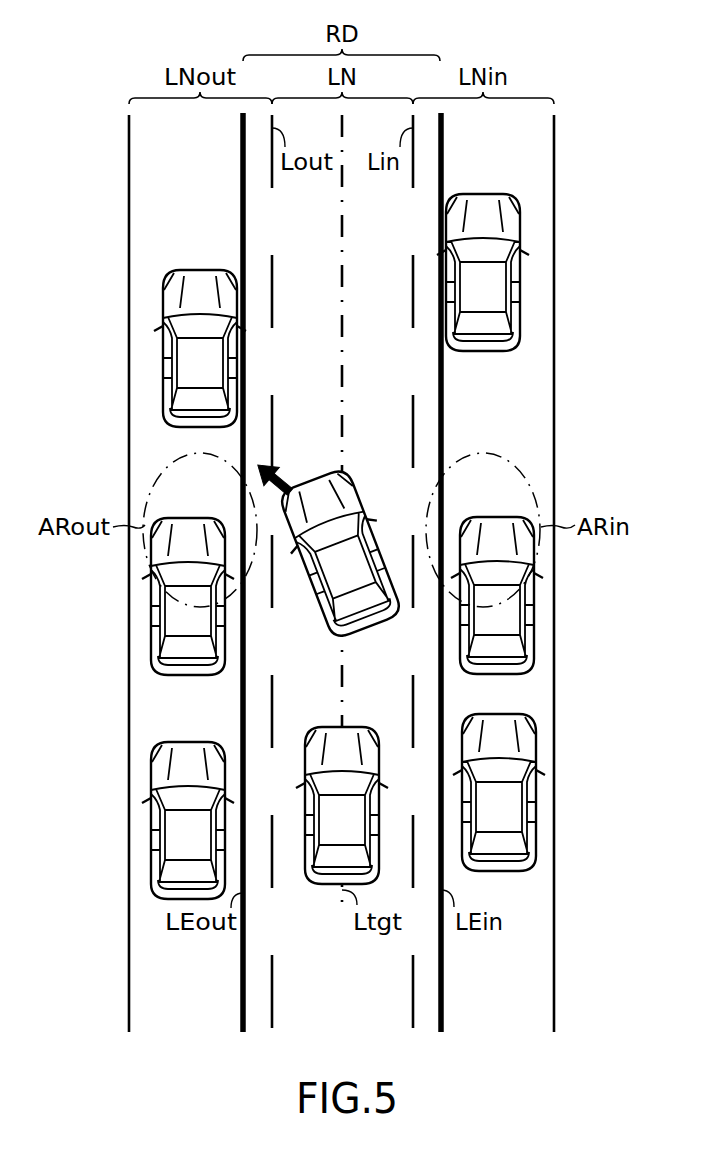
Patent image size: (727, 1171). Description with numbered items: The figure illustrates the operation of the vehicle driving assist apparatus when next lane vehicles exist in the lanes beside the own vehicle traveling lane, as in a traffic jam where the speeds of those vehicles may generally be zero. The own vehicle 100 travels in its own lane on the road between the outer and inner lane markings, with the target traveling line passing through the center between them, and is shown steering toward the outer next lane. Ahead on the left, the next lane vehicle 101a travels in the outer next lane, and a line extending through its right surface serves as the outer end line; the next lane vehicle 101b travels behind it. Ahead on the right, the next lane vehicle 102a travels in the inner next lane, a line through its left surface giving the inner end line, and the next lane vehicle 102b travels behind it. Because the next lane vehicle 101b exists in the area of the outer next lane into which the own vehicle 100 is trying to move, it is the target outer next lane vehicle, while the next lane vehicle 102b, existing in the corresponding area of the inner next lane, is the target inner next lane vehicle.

The own vehicle 100 is at (372, 621).
The next lane vehicle 101a is at (165, 358).
The next lane vehicle 101b is at (152, 609).
The next lane vehicle 102a is at (520, 283).
The next lane vehicle 102b is at (534, 625).